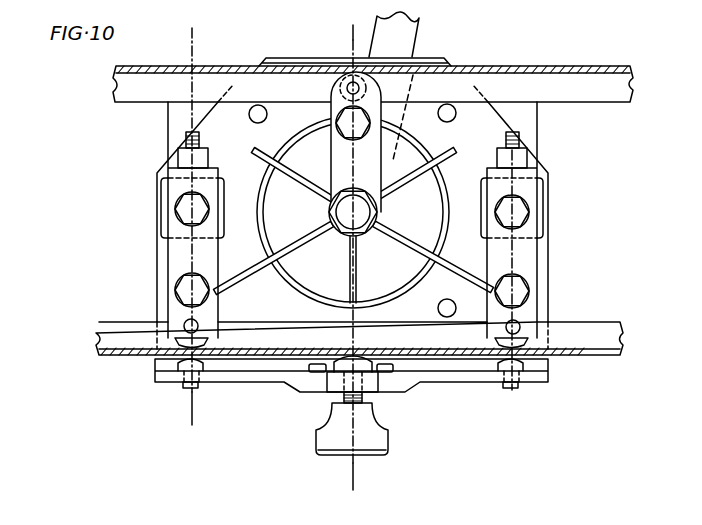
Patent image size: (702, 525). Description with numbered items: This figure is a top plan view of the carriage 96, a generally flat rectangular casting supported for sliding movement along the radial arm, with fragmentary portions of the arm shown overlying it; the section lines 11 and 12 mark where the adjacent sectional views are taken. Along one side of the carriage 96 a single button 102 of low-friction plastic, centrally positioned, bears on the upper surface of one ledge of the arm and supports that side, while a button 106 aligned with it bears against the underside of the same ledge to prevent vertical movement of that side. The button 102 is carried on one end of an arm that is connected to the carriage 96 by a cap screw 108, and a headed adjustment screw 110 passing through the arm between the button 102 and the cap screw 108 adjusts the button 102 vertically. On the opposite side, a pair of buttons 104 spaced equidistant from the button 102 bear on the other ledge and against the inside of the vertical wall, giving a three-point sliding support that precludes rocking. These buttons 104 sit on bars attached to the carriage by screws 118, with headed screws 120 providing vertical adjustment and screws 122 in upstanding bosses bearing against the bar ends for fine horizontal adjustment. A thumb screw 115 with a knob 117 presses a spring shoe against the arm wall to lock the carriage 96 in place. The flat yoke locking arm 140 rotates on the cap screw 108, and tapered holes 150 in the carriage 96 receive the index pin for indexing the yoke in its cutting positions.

The section line 11- 11 is at (208, 38).
The section line 12- 12 is at (370, 33).
The carriage 96 is at (552, 269).
The single button 102 is at (346, 90).
The pair of buttons 104 is at (187, 322).
The button 106 is at (381, 160).
The cap screw 108 is at (374, 212).
The headed adjustment screw 110 is at (346, 131).
The thumb screw 115 is at (371, 397).
The knob 117 is at (383, 441).
The screws 118 is at (500, 213).
The headed screws 120 is at (528, 266).
The screws 122 is at (523, 137).
The flat yoke locking arm 140 is at (417, 38).
The tapered holes 150 is at (266, 117).